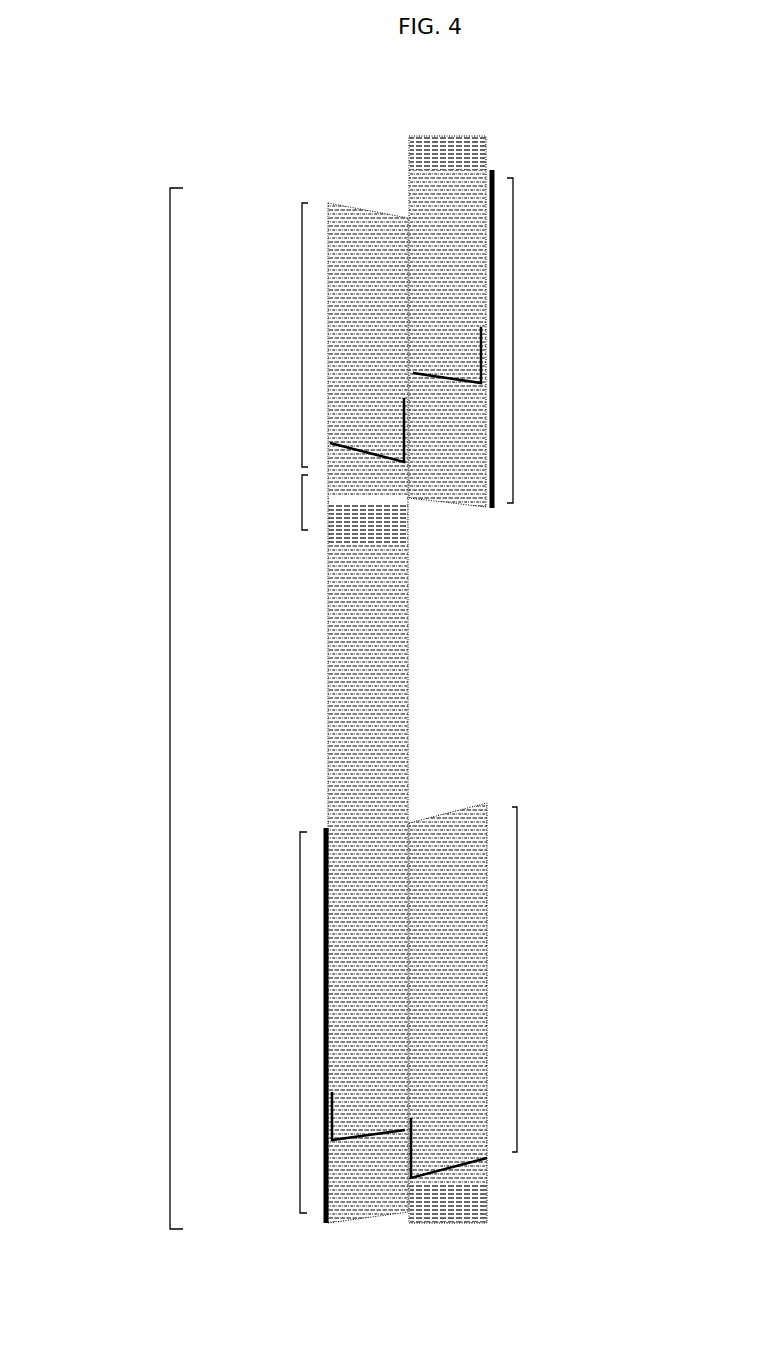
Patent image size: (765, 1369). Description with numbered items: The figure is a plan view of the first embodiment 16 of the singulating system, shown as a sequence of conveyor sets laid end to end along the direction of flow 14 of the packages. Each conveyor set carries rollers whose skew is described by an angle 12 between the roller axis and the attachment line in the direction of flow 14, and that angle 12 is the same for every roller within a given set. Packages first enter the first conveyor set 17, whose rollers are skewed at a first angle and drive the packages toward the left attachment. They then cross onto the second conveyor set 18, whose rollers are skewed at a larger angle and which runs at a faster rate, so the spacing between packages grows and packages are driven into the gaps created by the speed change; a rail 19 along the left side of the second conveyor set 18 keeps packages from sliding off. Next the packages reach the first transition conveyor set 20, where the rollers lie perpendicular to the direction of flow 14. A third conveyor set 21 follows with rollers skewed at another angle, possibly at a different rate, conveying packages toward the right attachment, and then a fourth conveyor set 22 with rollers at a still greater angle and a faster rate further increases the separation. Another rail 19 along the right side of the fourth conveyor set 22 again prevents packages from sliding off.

The angle 12 is at (318, 725).
The direction of flow 14 is at (483, 712).
The first embodiment 16 is at (170, 712).
The first conveyor set 17 is at (517, 980).
The second conveyor set 18 is at (300, 1024).
The rail 19 is at (500, 515).
The first transition conveyor set 20 is at (302, 503).
The third conveyor set 21 is at (302, 335).
The fourth conveyor set 22 is at (513, 340).